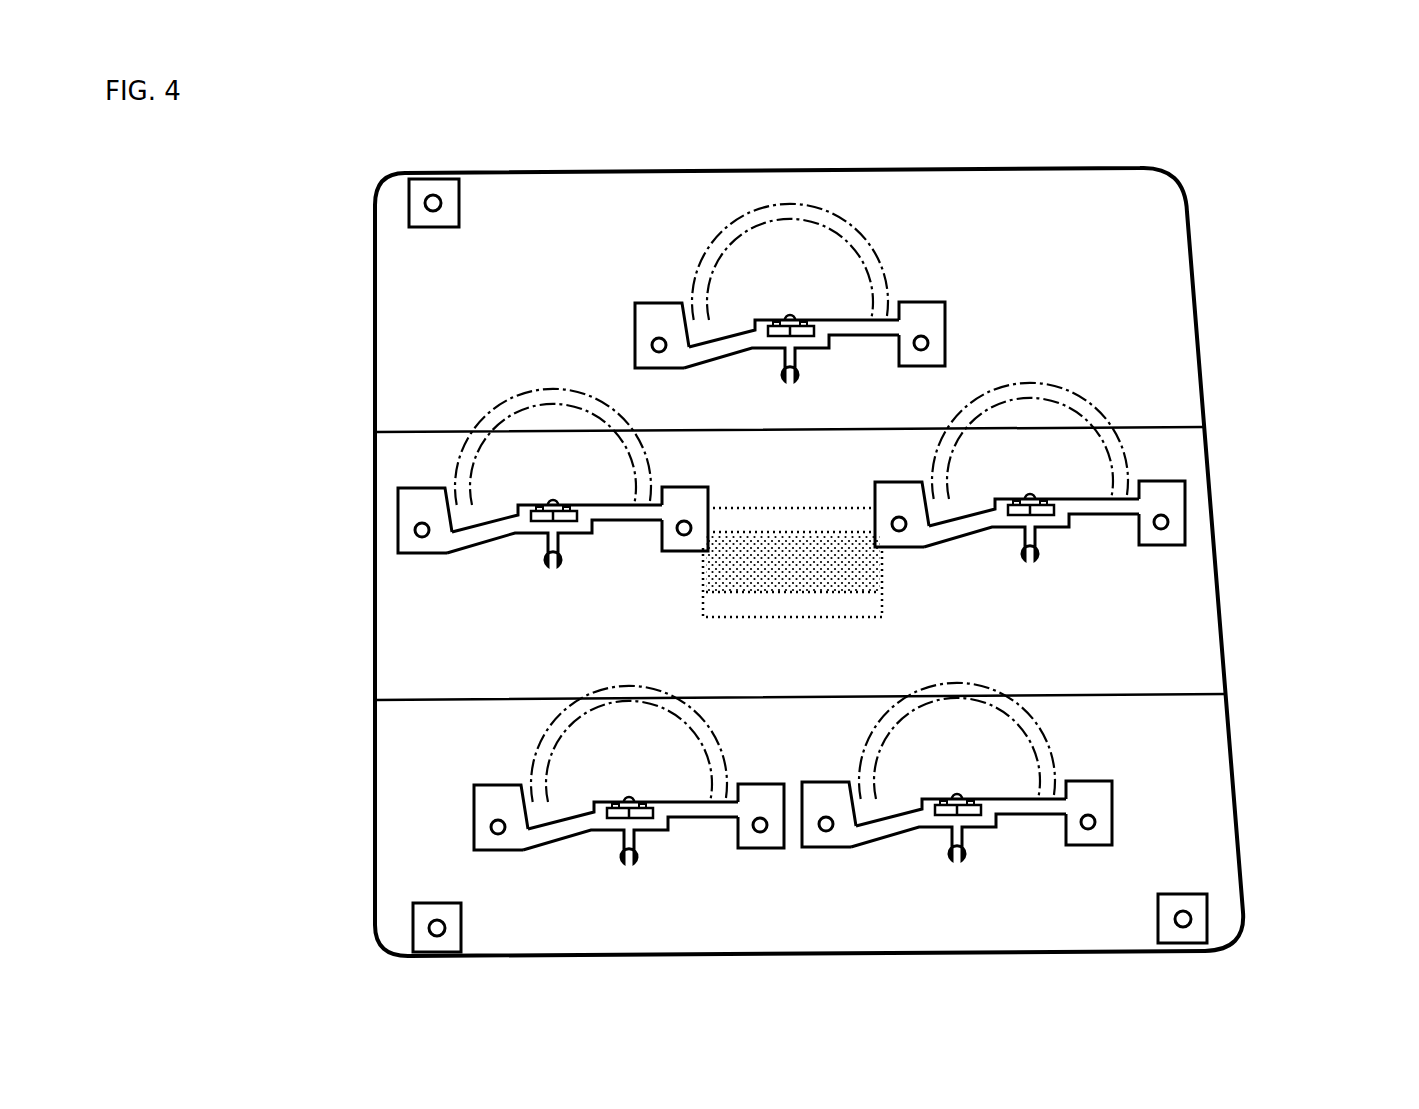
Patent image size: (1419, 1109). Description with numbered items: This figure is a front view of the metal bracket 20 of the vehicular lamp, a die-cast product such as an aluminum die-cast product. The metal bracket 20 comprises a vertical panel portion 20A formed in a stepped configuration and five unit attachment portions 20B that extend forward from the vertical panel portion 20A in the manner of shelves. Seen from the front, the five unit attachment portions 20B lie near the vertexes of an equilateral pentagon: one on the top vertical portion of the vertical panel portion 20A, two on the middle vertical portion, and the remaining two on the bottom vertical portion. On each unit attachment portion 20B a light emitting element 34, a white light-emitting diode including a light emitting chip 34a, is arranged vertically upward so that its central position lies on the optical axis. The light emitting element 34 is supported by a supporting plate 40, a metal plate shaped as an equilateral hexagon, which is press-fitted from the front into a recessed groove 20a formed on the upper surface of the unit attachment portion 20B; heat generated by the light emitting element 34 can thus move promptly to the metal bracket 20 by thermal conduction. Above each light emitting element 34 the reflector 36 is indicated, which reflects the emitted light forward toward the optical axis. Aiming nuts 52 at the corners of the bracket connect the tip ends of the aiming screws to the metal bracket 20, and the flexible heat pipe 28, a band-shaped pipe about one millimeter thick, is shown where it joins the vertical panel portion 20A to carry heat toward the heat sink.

The metal bracket 20 is at (1214, 192).
The vertical panel portion 20A is at (1150, 620).
The unit attachment portions 20B is at (925, 320).
The recessed groove 20a is at (815, 336).
The aiming nut 52 is at (412, 202).
The light emitting element 34 is at (808, 317).
The light emitting chip 34a is at (784, 318).
The reflector 36 is at (742, 235).
The supporting plate 40 is at (772, 338).
The flexible heat pipe 28 is at (808, 618).